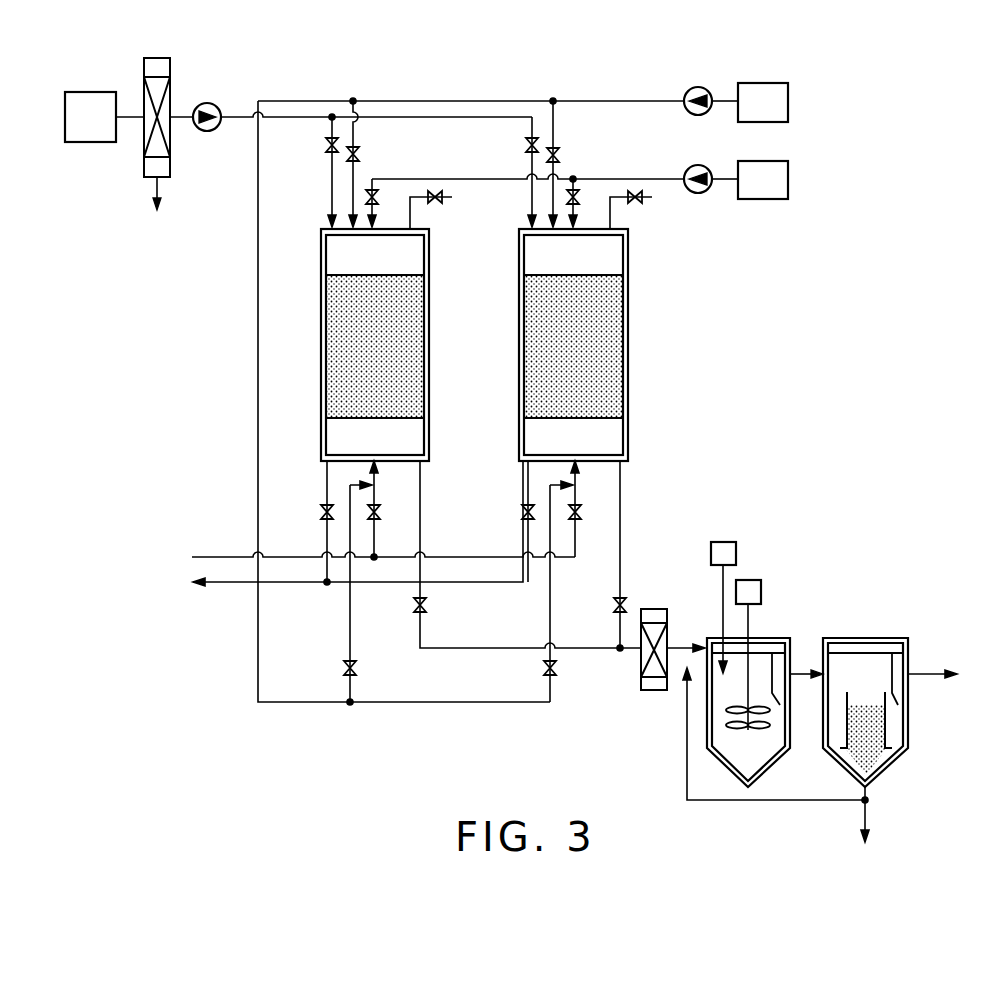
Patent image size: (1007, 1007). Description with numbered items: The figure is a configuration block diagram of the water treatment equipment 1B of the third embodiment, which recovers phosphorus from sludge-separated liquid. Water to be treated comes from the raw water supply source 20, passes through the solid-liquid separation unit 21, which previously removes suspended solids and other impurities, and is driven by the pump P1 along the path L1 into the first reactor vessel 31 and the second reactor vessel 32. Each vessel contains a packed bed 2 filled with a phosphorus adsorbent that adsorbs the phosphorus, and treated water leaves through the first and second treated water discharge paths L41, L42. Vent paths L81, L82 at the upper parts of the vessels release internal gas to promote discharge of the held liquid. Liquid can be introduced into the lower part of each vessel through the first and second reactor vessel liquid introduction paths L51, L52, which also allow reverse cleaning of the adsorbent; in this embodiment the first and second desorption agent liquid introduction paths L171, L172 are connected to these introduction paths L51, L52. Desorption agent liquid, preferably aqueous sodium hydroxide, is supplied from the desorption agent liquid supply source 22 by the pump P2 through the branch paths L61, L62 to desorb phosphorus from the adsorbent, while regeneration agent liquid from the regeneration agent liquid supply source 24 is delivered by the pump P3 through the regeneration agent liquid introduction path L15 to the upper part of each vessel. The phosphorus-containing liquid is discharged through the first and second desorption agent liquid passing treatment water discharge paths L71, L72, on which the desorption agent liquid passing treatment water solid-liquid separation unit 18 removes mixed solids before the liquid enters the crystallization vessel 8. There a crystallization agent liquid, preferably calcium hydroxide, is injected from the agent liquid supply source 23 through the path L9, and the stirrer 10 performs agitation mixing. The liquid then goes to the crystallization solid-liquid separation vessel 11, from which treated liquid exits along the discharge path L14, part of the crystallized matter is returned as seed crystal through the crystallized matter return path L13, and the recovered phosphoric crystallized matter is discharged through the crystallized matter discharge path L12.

The water treatment equipment 1B is at (484, 55).
The raw water supply source 20 is at (88, 92).
The solid-liquid separation unit 21 is at (144, 165).
The pump P1 is at (207, 103).
The path L1 is at (238, 122).
The first desorption agent liquid introduction path L61 is at (353, 135).
The vent path L81 is at (410, 215).
The first reactor vessel 31 is at (429, 253).
The packed bed 2 is at (415, 352).
The second desorption agent liquid introduction path L62 is at (553, 135).
The vent path L82 is at (610, 215).
The second reactor vessel 32 is at (628, 253).
The regeneration agent liquid introduction path L15 is at (655, 179).
The pump P2 is at (698, 87).
The desorption agent liquid supply source 22 is at (762, 83).
The pump P3 is at (698, 165).
The regeneration agent liquid supply source 24 is at (762, 200).
The first treated water discharge path L41 is at (327, 485).
The first reactor vessel liquid introduction path L51 is at (376, 528).
The first desorption agent liquid introduction path L171 is at (350, 548).
The second treated water discharge path L42 is at (528, 485).
The second reactor vessel liquid introduction path L52 is at (577, 528).
The second desorption agent liquid introduction path L172 is at (550, 548).
The first desorption agent liquid passing treatment water discharge path L71 is at (420, 628).
The second desorption agent liquid passing treatment water discharge path L72 is at (620, 585).
The desorption agent liquid passing treatment water solid-liquid separation unit 18 is at (641, 682).
The path L9 is at (723, 600).
The agent liquid supply source 23 is at (736, 553).
The stirrer 10 is at (761, 592).
The crystallized matter return path L13 is at (687, 735).
The crystallization vessel 8 is at (770, 762).
The crystallization solid-liquid separation vessel 11 is at (908, 724).
The discharge path L14 is at (927, 672).
The crystallized matter discharge path L12 is at (868, 808).